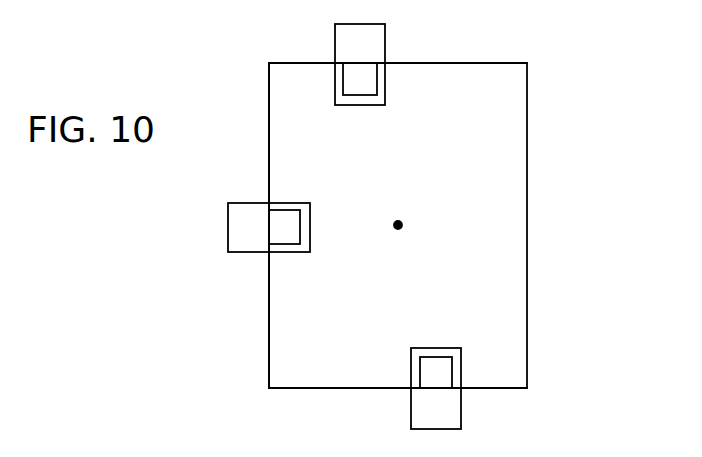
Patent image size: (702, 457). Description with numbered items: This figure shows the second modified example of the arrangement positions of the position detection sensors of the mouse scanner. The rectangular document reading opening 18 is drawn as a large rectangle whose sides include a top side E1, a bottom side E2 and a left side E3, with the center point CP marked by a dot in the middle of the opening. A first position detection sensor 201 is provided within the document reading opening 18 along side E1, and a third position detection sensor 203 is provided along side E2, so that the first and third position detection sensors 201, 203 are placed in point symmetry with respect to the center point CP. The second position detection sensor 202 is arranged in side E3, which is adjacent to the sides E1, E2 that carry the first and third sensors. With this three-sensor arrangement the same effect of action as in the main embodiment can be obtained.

The document reading opening 18 is at (519, 134).
The first position detection sensor 201 is at (350, 78).
The second position detection sensor 202 is at (290, 218).
The third position detection sensor 203 is at (430, 377).
The center point CP is at (400, 222).
The side E1 is at (438, 63).
The side E2 is at (495, 388).
The side E3 is at (269, 308).